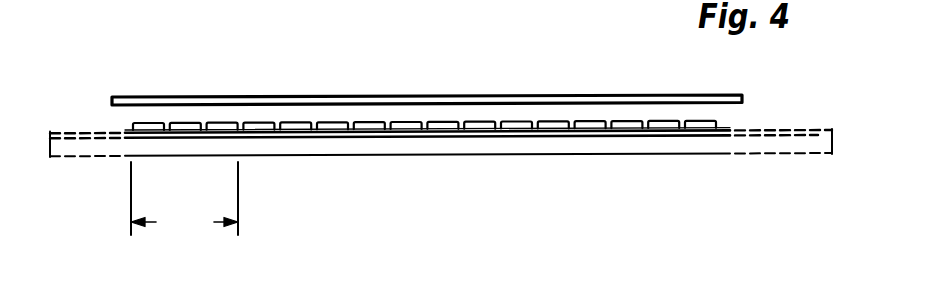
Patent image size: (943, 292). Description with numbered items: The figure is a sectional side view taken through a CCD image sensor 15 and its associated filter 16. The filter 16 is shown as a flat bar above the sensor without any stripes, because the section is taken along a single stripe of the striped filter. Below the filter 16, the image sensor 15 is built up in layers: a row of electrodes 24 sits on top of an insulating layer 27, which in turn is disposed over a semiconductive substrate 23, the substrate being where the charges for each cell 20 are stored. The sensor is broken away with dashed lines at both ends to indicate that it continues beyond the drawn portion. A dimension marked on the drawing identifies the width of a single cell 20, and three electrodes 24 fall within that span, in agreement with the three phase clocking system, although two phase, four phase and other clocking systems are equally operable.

The image sensor 15 is at (842, 115).
The filter 16 is at (742, 98).
The cell 20 is at (204, 265).
The semiconductive substrate 23 is at (803, 143).
The electrode 24 is at (221, 123).
The insulating layer 27 is at (625, 134).